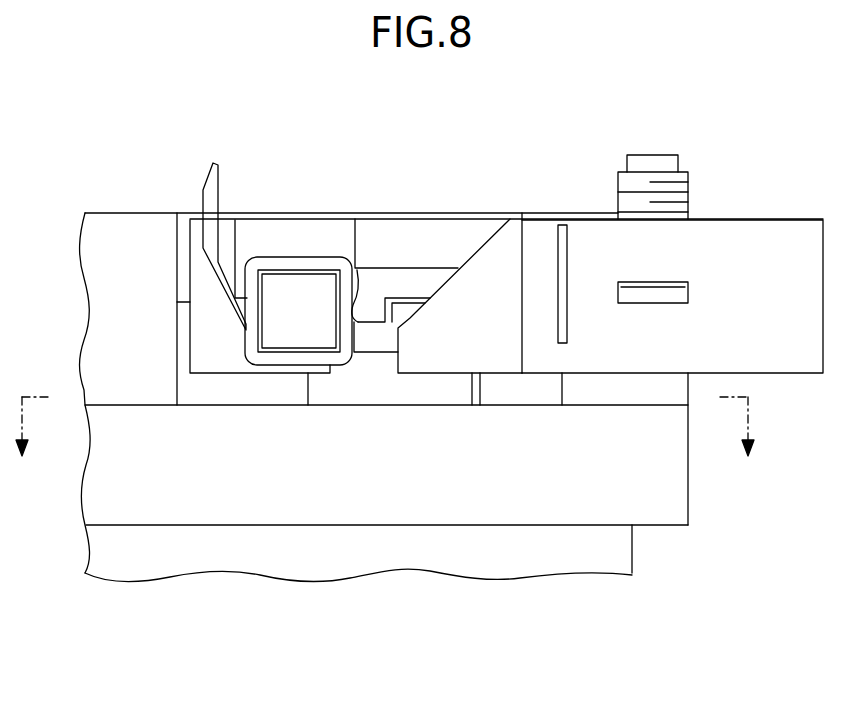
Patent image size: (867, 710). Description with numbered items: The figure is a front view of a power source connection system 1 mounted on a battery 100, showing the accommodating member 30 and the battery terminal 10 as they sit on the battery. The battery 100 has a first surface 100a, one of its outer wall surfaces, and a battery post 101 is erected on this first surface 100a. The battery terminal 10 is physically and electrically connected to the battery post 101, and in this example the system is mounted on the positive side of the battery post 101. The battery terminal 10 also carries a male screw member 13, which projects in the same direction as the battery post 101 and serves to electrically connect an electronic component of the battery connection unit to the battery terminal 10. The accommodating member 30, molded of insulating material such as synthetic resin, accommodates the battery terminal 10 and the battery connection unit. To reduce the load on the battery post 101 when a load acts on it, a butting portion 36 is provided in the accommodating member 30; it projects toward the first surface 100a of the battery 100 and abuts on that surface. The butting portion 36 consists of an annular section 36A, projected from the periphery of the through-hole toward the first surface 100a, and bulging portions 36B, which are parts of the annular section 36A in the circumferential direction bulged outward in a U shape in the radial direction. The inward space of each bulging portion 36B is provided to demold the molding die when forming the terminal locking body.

The power source connection system 1 is at (551, 136).
The battery 100 is at (123, 199).
The first surface 100a is at (117, 405).
The battery terminal 10 is at (405, 268).
The battery post 101 is at (435, 218).
The male screw member 13 is at (688, 198).
The accommodating member 30 is at (778, 220).
The butting portion 36 is at (562, 650).
The annular section 36A is at (435, 390).
The bulging portion 36B is at (515, 390).